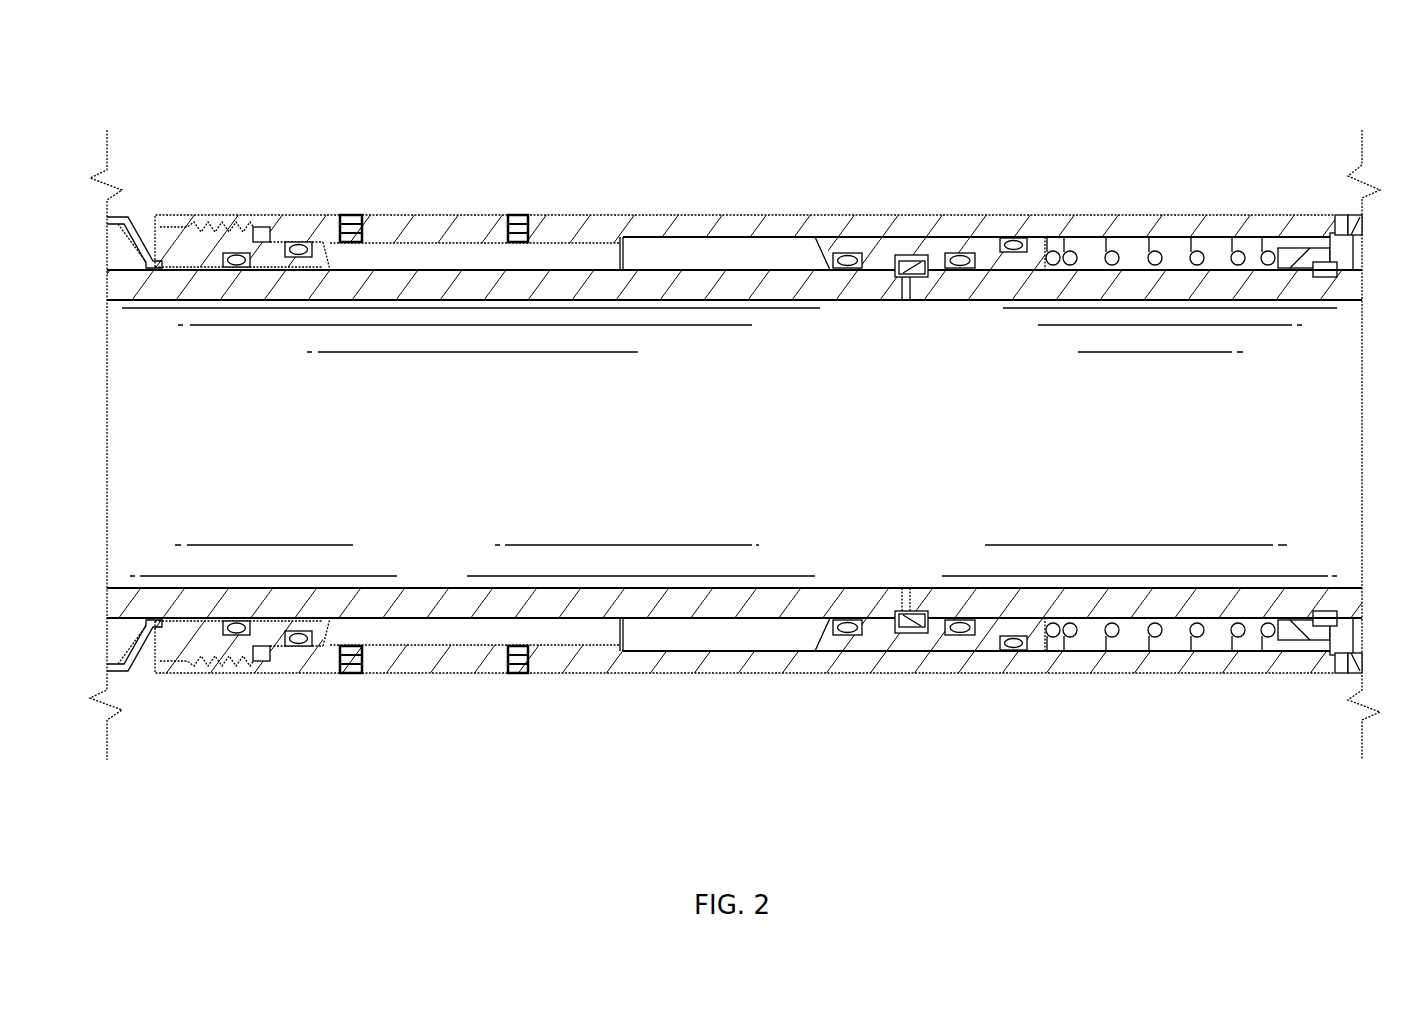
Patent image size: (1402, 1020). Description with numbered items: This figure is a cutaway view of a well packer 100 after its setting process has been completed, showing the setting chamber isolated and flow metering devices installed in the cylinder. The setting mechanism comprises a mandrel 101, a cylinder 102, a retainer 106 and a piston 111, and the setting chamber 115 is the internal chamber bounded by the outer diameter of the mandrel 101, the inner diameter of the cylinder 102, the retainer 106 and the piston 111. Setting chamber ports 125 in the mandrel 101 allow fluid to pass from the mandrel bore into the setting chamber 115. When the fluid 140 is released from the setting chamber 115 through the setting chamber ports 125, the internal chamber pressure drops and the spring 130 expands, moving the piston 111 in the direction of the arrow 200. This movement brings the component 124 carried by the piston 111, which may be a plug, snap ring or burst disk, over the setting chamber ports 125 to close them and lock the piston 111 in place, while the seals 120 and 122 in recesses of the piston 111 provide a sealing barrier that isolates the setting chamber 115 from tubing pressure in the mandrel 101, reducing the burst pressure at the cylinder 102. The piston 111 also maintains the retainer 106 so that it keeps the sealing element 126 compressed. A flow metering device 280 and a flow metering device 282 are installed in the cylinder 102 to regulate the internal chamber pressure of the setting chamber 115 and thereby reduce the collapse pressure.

The well packer 100 is at (167, 30).
The mandrel 101 is at (716, 457).
The cylinder 102 is at (658, 203).
The retainer 106 is at (170, 227).
The piston 111 is at (985, 247).
The setting chamber 115 is at (600, 258).
The seal 120 is at (845, 268).
The seal 122 is at (960, 255).
The component 124 is at (910, 255).
The setting chamber ports 125 is at (913, 300).
The sealing element 126 is at (130, 668).
The spring 130 is at (1130, 640).
The fluid 140 is at (908, 536).
The arrow 200 is at (465, 125).
The flow metering device 280 is at (516, 215).
The flow metering device 282 is at (349, 215).